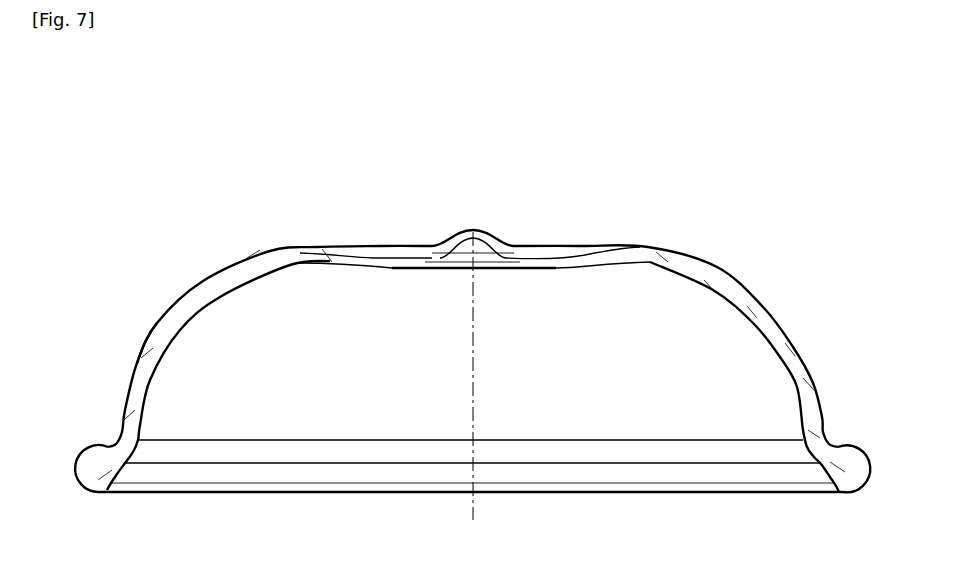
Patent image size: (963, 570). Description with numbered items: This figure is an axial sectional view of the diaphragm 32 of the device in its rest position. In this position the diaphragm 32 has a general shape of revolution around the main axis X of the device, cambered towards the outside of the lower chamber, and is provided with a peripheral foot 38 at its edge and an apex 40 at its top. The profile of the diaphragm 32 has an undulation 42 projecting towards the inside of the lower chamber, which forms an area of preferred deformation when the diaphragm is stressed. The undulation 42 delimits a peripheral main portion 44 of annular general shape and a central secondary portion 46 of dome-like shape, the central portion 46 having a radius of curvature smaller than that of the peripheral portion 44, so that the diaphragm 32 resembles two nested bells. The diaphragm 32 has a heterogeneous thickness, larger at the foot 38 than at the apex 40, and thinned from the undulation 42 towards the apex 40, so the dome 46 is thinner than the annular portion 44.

The diaphragm 32 is at (715, 262).
The peripheral foot 38 is at (840, 468).
The apex 40 is at (473, 230).
The undulation 42 is at (397, 265).
The peripheral main portion 44 is at (207, 300).
The central secondary portion 46 is at (445, 250).
The main axis X is at (478, 402).